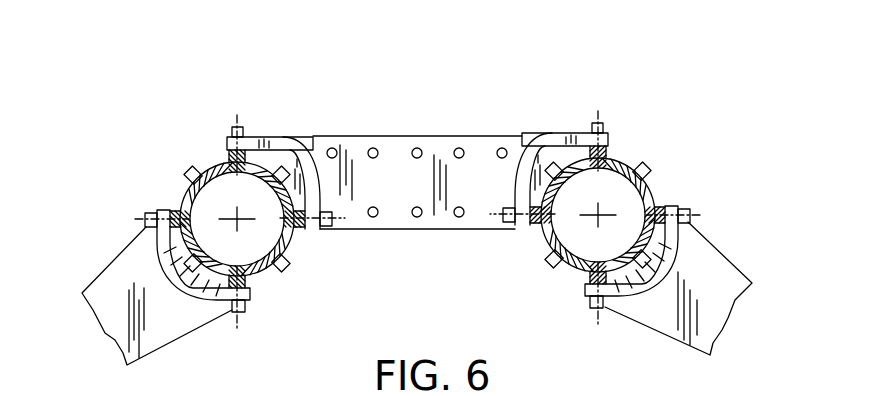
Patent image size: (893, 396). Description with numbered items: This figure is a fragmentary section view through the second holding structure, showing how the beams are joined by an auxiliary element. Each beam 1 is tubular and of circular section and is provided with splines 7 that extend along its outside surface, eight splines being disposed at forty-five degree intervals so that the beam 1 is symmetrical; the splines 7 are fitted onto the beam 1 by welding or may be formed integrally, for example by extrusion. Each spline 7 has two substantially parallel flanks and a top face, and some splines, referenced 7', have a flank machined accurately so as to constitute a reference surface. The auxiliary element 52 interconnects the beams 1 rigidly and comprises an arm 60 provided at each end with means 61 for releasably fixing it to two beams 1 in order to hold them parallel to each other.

The beam 1 is at (168, 177).
The spline 7 is at (425, 209).
The spline with reference flank 7' is at (417, 169).
The auxiliary element 52 is at (393, 124).
The arm 60 is at (442, 230).
The means for releasably fixing 61 is at (290, 137).